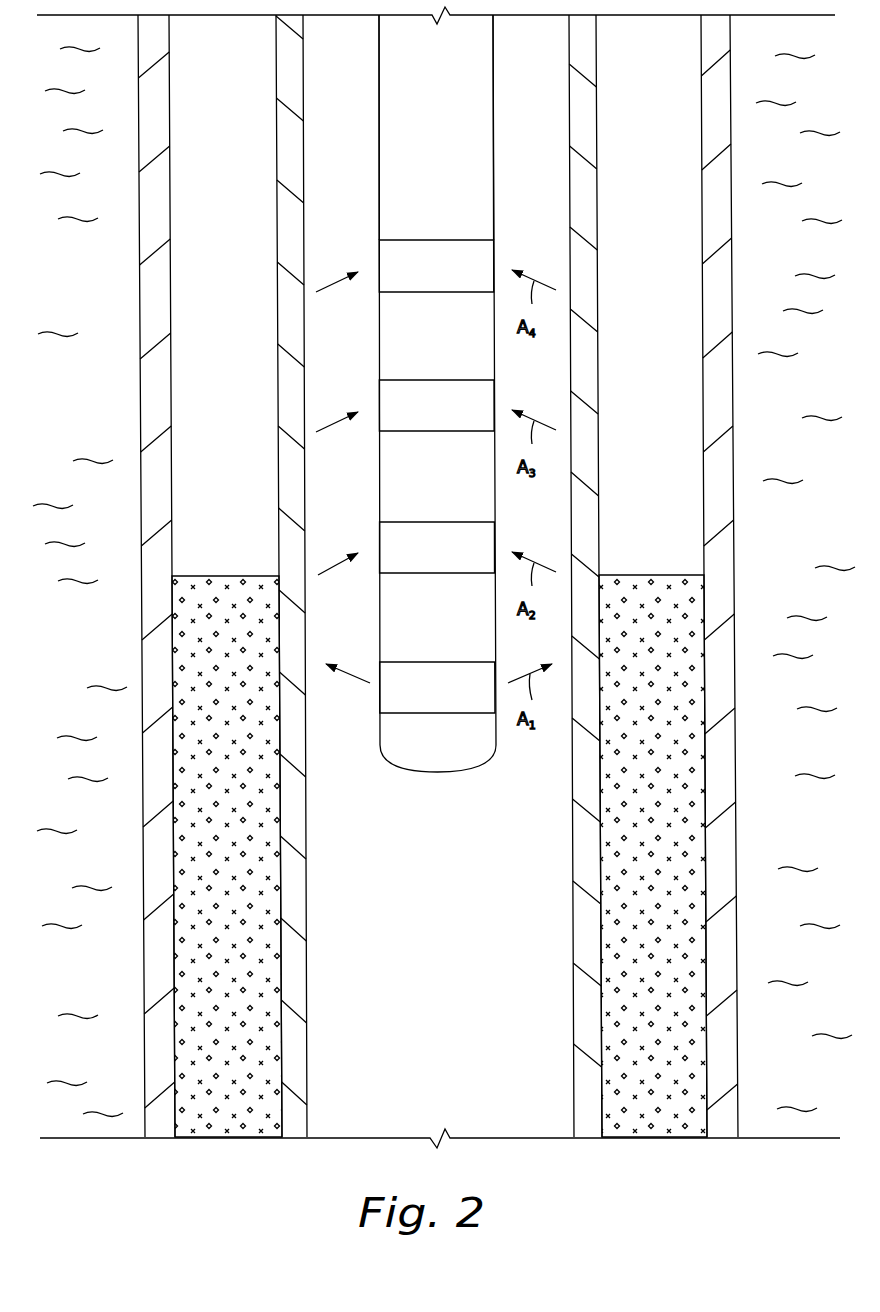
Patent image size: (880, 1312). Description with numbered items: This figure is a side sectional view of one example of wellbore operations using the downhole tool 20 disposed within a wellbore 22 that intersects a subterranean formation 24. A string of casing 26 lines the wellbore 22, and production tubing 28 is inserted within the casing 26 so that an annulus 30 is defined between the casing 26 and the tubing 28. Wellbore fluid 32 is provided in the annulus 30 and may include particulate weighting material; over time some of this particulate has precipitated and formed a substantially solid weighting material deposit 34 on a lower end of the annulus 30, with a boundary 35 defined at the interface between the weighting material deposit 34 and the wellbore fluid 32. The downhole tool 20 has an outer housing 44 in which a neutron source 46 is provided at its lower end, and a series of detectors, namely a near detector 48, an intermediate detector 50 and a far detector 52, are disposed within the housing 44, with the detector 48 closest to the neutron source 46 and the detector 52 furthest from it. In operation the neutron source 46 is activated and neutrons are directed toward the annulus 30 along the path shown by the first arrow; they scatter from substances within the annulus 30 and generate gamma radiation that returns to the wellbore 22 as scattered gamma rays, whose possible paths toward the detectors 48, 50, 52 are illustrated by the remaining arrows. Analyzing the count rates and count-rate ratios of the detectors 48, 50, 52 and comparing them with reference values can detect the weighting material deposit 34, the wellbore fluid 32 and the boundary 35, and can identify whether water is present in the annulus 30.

The downhole tool 20 is at (433, 784).
The wellbore 22 is at (514, 1086).
The subterranean formation 24 is at (828, 533).
The casing 26 is at (158, 970).
The production tubing 28 is at (293, 970).
The annulus 30 is at (205, 293).
The wellbore fluid 32 is at (222, 387).
The weighting material deposit 34 is at (196, 643).
The boundary 35 is at (637, 575).
The outer housing 44 is at (379, 155).
The neutron source 46 is at (449, 698).
The near detector 48 is at (449, 559).
The intermediate detector 50 is at (449, 417).
The far detector 52 is at (449, 278).